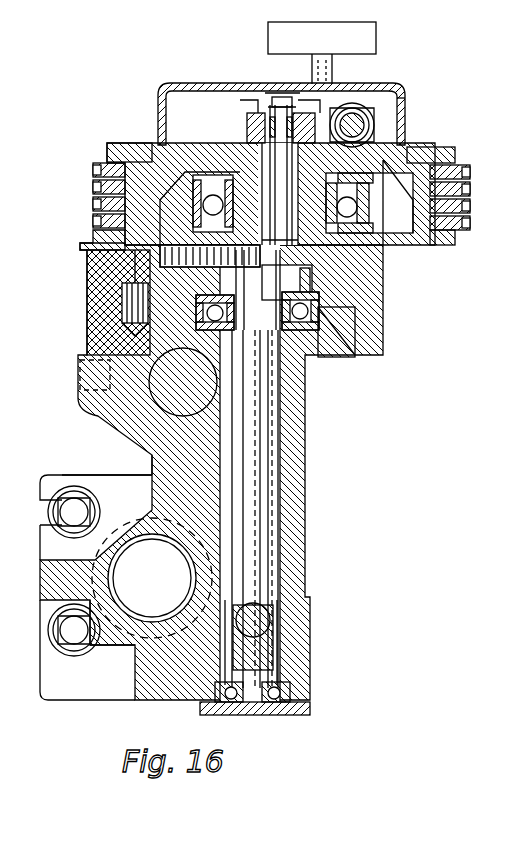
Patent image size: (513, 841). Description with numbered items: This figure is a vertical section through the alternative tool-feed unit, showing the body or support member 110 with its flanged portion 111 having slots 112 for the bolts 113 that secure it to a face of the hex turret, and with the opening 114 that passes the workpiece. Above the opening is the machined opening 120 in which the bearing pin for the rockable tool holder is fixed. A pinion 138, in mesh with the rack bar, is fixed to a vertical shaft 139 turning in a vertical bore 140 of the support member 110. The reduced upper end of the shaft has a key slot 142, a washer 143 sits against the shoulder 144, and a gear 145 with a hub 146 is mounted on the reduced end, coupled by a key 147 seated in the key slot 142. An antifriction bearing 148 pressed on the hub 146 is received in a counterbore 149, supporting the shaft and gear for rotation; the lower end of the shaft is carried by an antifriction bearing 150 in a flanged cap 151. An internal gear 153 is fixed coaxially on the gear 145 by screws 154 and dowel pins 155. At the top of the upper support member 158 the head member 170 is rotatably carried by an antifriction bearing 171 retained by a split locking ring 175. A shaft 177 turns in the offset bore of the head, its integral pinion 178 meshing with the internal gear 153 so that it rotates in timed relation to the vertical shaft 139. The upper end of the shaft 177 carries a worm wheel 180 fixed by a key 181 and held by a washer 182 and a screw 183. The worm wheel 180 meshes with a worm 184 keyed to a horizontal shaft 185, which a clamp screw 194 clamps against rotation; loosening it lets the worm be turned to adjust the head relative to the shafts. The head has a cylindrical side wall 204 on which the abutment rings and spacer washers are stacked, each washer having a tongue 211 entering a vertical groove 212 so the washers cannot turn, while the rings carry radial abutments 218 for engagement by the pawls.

The support member 110 is at (305, 540).
The flanged portion 111 is at (62, 478).
The slots 112 is at (48, 512).
The bolts 113 is at (48, 630).
The opening 114 is at (152, 578).
The machined opening 120 is at (183, 382).
The pinion 138 is at (275, 660).
The vertical shaft 139 is at (260, 392).
The vertical bore 140 is at (290, 405).
The key slot 142 is at (279, 311).
The washer 143 is at (256, 469).
The shoulder 144 is at (288, 345).
The gear 145 is at (383, 295).
The hub 146 is at (287, 282).
The key 147 is at (200, 312).
The antifriction bearing 148 is at (200, 330).
The counterbore 149 is at (383, 345).
The antifriction bearing 150 is at (270, 715).
The cap 151 is at (220, 715).
The internal gear 153 is at (80, 247).
The screws 154 is at (330, 262).
The dowel pins 155 is at (87, 273).
The upper support member 158 is at (383, 322).
The head member 170 is at (152, 145).
The antifriction bearing 171 is at (369, 214).
The split locking ring 175 is at (212, 172).
The shaft 177 is at (280, 194).
The pinion 178 is at (280, 221).
The worm wheel 180 is at (247, 118).
The key 181 is at (279, 175).
The washer 182 is at (245, 84).
The screw 183 is at (290, 92).
The worm 184 is at (405, 98).
The horizontal shaft 185 is at (374, 124).
The clamp screw 194 is at (376, 40).
The cylindrical side wall 204 is at (470, 186).
The tongue 211 is at (455, 155).
The vertical groove 212 is at (440, 245).
The radial abutments 218 is at (93, 221).